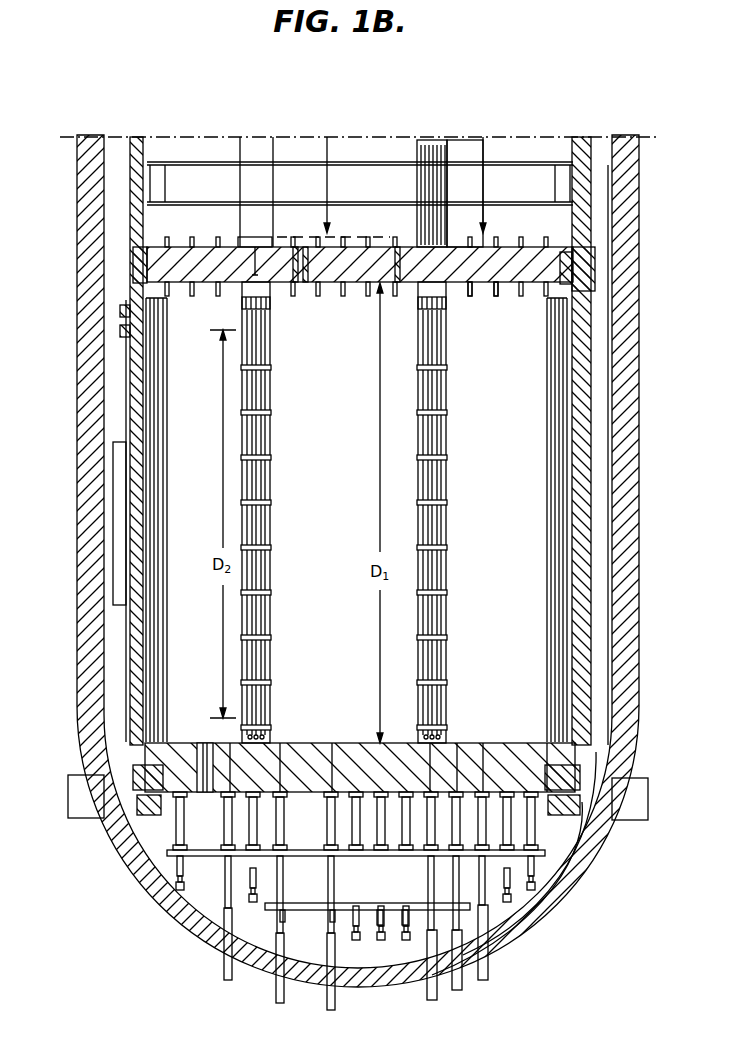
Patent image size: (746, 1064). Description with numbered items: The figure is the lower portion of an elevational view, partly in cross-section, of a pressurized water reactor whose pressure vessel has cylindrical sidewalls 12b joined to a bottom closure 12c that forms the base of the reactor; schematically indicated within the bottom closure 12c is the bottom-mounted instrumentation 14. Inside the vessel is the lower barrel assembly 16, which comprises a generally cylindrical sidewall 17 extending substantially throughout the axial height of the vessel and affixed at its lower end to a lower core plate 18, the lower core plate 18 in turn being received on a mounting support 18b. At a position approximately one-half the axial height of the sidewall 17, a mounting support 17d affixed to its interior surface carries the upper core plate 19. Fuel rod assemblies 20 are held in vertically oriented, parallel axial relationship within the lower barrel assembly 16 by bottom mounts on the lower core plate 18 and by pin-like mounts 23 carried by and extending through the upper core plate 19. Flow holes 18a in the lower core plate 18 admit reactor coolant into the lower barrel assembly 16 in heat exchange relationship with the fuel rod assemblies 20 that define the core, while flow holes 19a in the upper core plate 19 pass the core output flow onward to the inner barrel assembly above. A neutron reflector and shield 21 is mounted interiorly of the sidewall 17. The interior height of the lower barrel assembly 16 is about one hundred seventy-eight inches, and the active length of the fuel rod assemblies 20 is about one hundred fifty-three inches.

The cylindrical sidewalls 12b is at (638, 672).
The bottom closure 12c is at (608, 832).
The bottom-mounted instrumentation 14 is at (392, 940).
The lower barrel assembly 16 is at (110, 389).
The cylindrical sidewall 17 is at (591, 468).
The mounting support 17d is at (572, 272).
The lower core plate 18 is at (310, 743).
The flow holes 18a is at (212, 743).
The mounting support 18b is at (576, 852).
The upper core plate 19 is at (513, 247).
The flow holes 19a is at (308, 286).
The fuel rod assemblies 20 is at (418, 487).
The neutron reflector and shield 21 is at (166, 378).
The pin-like mounts 23 is at (496, 297).